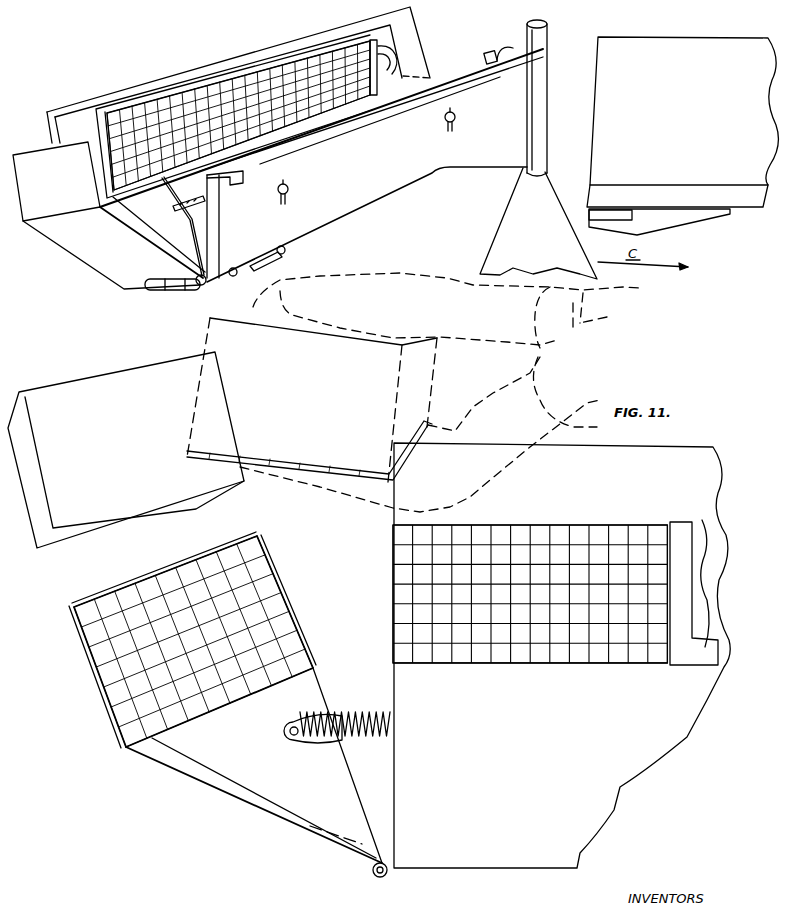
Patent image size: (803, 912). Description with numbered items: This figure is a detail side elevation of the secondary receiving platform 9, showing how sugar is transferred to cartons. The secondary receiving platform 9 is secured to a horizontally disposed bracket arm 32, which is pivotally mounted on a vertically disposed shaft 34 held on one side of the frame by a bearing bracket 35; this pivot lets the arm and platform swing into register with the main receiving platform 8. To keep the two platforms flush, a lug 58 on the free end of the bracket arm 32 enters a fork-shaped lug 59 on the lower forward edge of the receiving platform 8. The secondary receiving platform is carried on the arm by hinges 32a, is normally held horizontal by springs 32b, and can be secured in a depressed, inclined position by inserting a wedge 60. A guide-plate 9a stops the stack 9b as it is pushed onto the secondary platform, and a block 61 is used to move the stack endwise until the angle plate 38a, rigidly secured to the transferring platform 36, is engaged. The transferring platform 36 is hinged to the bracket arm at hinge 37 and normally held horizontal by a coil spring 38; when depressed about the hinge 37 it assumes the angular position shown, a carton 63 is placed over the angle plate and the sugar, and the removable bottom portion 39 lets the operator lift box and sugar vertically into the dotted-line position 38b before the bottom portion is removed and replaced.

The receiving platform 8 is at (682, 122).
The secondary receiving platform 9 is at (449, 74).
The guide-plate 9a is at (152, 97).
The stack 9b is at (240, 90).
The bracket arm 32 is at (353, 149).
The hinges 32a is at (290, 253).
The springs 32b is at (290, 192).
The vertically disposed shaft 34 is at (544, 24).
The bearing bracket 35 is at (538, 223).
The transferring platform 36 is at (167, 228).
The hinge 37 is at (194, 284).
The coil spring 38 is at (205, 203).
The angle plate 38a is at (56, 181).
The lifted position 38b is at (312, 400).
The removable bottom portion 39 is at (271, 470).
The lug 58 is at (243, 180).
The fork-shaped lug 59 is at (659, 222).
The wedge 60 is at (493, 52).
The block 61 is at (397, 66).
The carton 63 is at (126, 450).